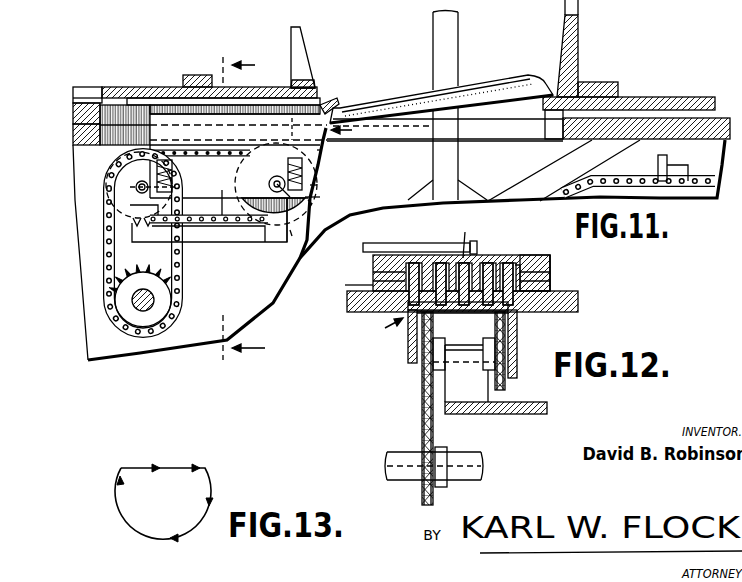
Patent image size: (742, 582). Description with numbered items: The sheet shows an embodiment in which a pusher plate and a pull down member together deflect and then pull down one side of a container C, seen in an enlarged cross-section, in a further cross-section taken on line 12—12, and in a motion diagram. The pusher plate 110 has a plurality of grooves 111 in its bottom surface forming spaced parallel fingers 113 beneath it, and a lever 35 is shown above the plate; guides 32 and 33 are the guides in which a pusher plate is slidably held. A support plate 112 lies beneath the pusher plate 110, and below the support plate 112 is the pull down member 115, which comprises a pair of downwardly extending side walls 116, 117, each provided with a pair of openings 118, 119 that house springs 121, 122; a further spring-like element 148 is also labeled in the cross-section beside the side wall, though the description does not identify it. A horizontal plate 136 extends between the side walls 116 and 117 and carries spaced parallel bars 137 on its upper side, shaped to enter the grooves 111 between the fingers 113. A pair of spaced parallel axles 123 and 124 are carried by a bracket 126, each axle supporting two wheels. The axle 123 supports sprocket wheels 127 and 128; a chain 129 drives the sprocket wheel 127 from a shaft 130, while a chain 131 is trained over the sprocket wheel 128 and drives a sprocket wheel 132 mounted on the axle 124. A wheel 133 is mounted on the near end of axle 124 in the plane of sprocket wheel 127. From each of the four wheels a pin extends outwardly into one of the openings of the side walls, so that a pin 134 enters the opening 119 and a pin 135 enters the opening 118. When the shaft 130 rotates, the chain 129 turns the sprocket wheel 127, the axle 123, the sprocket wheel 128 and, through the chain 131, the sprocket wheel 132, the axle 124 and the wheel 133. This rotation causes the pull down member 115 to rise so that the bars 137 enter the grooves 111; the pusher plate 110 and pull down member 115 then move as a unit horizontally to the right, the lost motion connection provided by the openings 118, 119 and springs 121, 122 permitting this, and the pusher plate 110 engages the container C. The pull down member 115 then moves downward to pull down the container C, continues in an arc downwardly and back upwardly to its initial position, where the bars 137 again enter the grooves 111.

In FIG. 11, the pusher plate 110 is at (118, 104).
In FIG. 12, the pusher plate 110 is at (487, 256).
In FIG. 11, the grooves 111 is at (152, 106).
In FIG. 12, the grooves 111 is at (513, 254).
In FIG. 11, the lever 35 is at (196, 75).
In FIG. 12, the lever 35 is at (399, 246).
In FIG. 11, the section line 12- 12 is at (258, 207).
In FIG. 11, the fingers 113 is at (337, 109).
In FIG. 12, the fingers 113 is at (520, 265).
In FIG. 11, the container C is at (480, 78).
In FIG. 11, the pull down member 115 is at (356, 132).
In FIG. 12, the pull down member 115 is at (379, 327).
In FIG. 11, the side wall 116 is at (320, 150).
In FIG. 12, the side wall 116 is at (517, 331).
In FIG. 11, the spring 148 is at (305, 170).
In FIG. 11, the spring 121 is at (316, 185).
In FIG. 11, the pin 135 is at (320, 197).
In FIG. 11, the wheel 133 is at (312, 196).
In FIG. 11, the axle 124 is at (298, 218).
In FIG. 11, the guide 32 is at (291, 233).
In FIG. 12, the guide 32 is at (550, 260).
In FIG. 11, the bracket 126 is at (227, 242).
In FIG. 12, the bracket 126 is at (468, 414).
In FIG. 11, the sprocket wheel 132 is at (288, 238).
In FIG. 11, the chain 129 is at (180, 264).
In FIG. 12, the chain 129 is at (422, 420).
In FIG. 11, the shaft 130 is at (153, 300).
In FIG. 12, the shaft 130 is at (390, 452).
In FIG. 11, the opening 119 is at (175, 160).
In FIG. 11, the chain 131 is at (222, 190).
In FIG. 12, the chain 131 is at (505, 387).
In FIG. 11, the spring 122 is at (209, 208).
In FIG. 11, the opening 118 is at (287, 167).
In FIG. 11, the axle 123 is at (138, 185).
In FIG. 11, the pin 134 is at (160, 190).
In FIG. 12, the pin 134 is at (420, 365).
In FIG. 11, the sprocket wheel 127 is at (152, 205).
In FIG. 12, the sprocket wheel 127 is at (422, 370).
In FIG. 12, the bars 137 is at (398, 255).
In FIG. 12, the guide 33 is at (373, 264).
In FIG. 12, the support plate 112 is at (550, 277).
In FIG. 12, the side wall 117 is at (408, 347).
In FIG. 12, the sprocket wheel 128 is at (486, 400).
In FIG. 12, the horizontal plate 136 is at (452, 310).